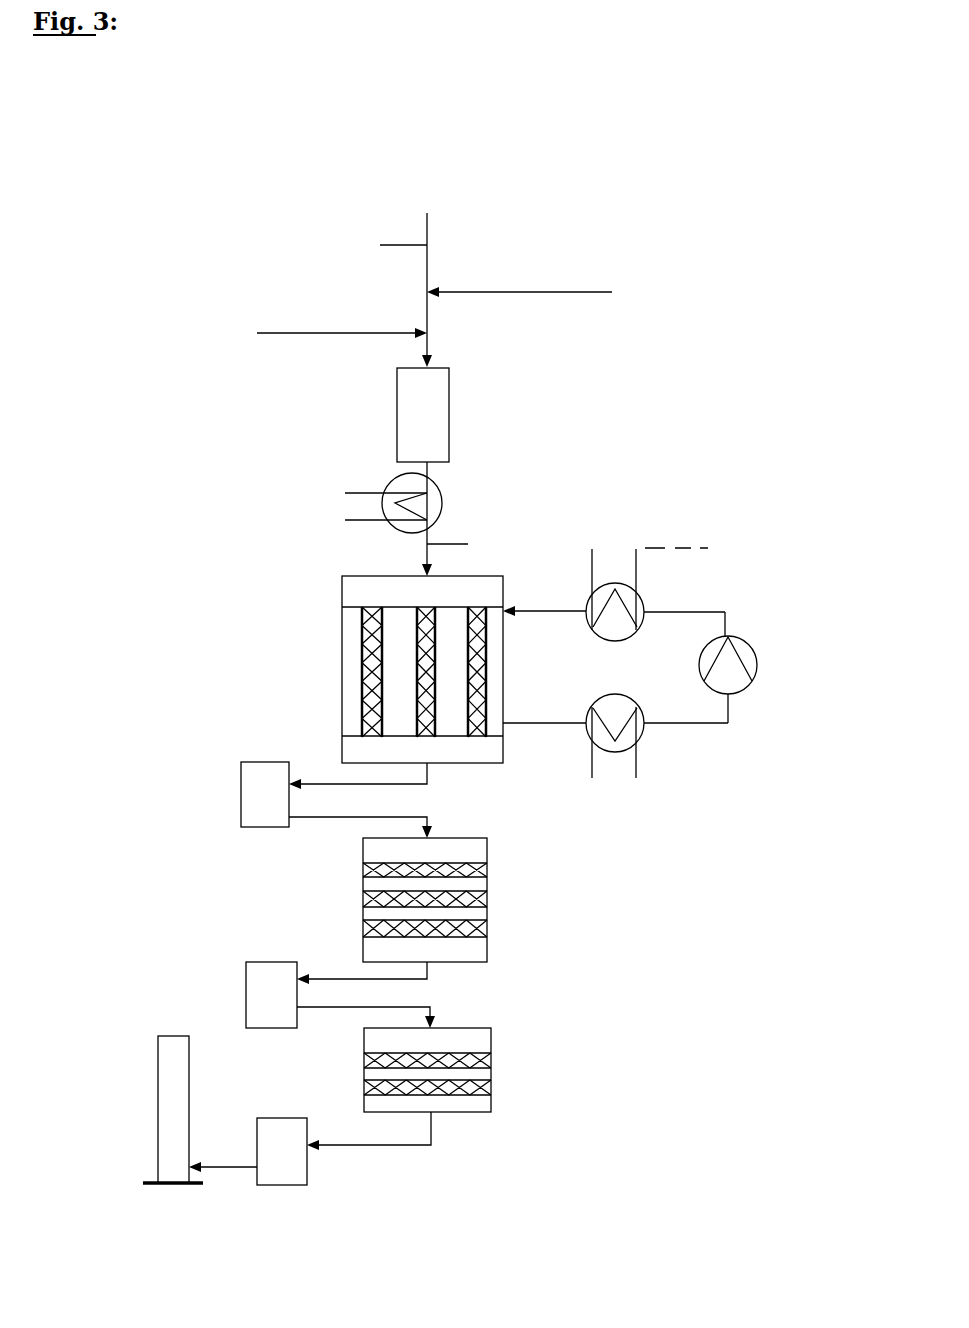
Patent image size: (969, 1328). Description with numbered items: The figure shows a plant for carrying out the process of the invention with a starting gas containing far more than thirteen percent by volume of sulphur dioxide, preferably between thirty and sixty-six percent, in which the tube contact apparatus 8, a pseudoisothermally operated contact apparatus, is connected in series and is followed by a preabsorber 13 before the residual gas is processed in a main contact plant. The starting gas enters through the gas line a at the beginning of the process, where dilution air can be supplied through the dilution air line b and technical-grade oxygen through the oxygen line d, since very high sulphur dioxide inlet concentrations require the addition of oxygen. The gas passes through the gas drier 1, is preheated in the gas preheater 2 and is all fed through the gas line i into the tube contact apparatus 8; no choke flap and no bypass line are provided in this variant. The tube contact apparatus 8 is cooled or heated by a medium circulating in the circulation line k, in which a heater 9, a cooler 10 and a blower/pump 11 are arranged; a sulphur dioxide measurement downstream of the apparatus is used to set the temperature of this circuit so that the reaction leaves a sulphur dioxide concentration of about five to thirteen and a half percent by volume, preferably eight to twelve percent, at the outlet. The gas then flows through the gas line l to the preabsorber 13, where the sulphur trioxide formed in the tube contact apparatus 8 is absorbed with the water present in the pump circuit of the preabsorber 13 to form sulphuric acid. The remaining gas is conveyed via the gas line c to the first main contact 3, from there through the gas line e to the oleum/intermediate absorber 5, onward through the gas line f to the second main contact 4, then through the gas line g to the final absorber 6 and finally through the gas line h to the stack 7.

The gas drier 1 is at (449, 403).
The gas preheater 2 is at (393, 477).
The first main contact 3 is at (487, 892).
The second main contact 4 is at (491, 1072).
The oleum/intermediate absorber 5 is at (267, 962).
The final absorber 6 is at (277, 1118).
The stack 7 is at (158, 1120).
The tube contact apparatus 8 is at (505, 593).
The heater 9 is at (640, 600).
The cooler 10 is at (643, 733).
The blower/pump 11 is at (757, 659).
The preabsorber 13 is at (241, 770).
The gas line at beginning of process a is at (391, 243).
The dilution air line b is at (519, 272).
The gas line to first main contact c is at (315, 817).
The oxygen line d is at (342, 314).
The gas line to oleum/intermediate absorber e is at (362, 952).
The gas line to second main contact f is at (338, 1008).
The gas line to final absorber g is at (378, 1145).
The gas line to stack h is at (224, 1167).
The gas line to tube contact apparatus i is at (453, 539).
The circulation line for cooling/heating k is at (725, 612).
The gas line to preabsorber l is at (333, 784).